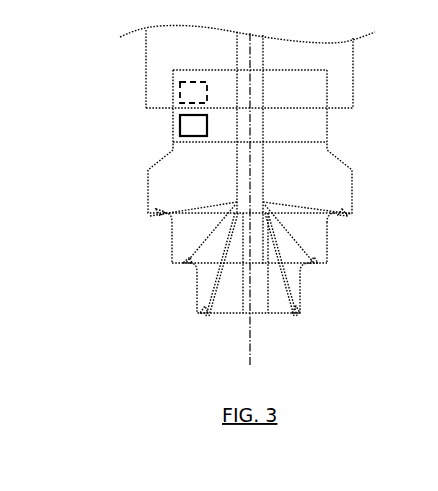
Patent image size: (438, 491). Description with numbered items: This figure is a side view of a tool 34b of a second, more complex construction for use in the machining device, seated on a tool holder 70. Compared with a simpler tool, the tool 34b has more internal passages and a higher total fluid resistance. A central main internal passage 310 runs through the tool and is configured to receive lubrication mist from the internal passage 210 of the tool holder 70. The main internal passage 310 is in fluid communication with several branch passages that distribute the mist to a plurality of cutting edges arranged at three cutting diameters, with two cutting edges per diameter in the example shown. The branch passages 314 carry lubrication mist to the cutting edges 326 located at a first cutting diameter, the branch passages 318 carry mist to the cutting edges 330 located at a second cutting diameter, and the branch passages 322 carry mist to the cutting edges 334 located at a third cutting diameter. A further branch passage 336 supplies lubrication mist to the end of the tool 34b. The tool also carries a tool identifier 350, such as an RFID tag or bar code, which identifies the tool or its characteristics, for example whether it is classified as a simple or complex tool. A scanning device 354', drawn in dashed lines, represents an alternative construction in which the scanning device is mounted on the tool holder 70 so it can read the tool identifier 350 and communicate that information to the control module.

The tool holder 70 is at (157, 53).
The internal passage 210 is at (262, 54).
The central main internal passage 310 is at (262, 124).
The scanning device 354' is at (128, 101).
The tool identifier 350 is at (180, 126).
The tool 34b is at (178, 147).
The branch passages 314 is at (178, 207).
The cutting edges 326 is at (160, 211).
The branch passages 318 is at (195, 247).
The cutting edges 330 is at (172, 263).
The branch passages 322 is at (213, 287).
The cutting edges 334 is at (200, 317).
The branch passage 336 is at (258, 303).